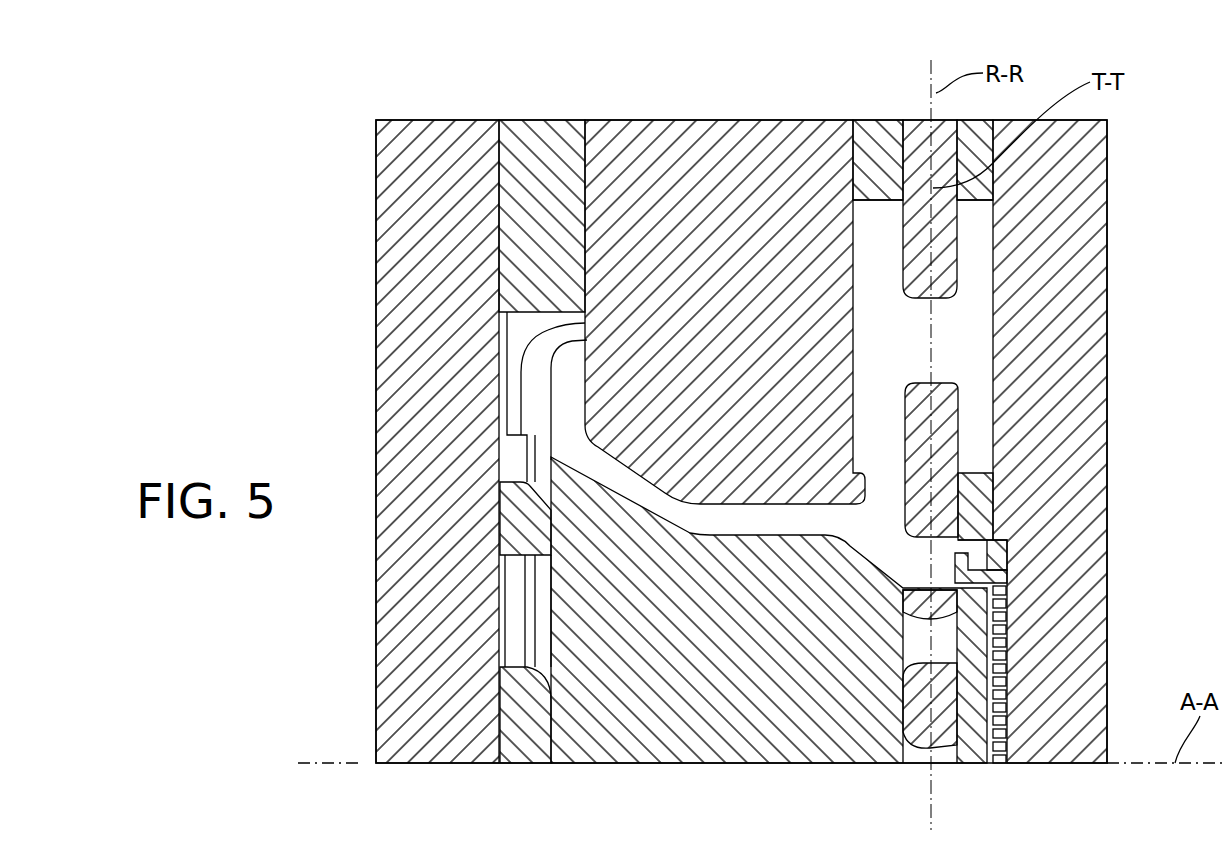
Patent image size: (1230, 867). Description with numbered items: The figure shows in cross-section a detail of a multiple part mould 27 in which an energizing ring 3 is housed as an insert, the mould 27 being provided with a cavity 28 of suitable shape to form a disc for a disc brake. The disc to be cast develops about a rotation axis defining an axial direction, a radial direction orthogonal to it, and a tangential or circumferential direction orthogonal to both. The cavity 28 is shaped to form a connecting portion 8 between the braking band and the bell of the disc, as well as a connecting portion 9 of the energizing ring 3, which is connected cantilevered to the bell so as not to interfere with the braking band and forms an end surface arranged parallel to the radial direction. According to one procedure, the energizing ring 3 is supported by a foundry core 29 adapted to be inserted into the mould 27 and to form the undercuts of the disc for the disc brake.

The mould 27 is at (790, 98).
The cavity 28 is at (887, 330).
The foundry core 29 is at (933, 430).
The connecting portion 8 is at (987, 540).
The energizing ring 3 is at (1000, 570).
The connecting portion of an energizing ring 9 is at (906, 576).